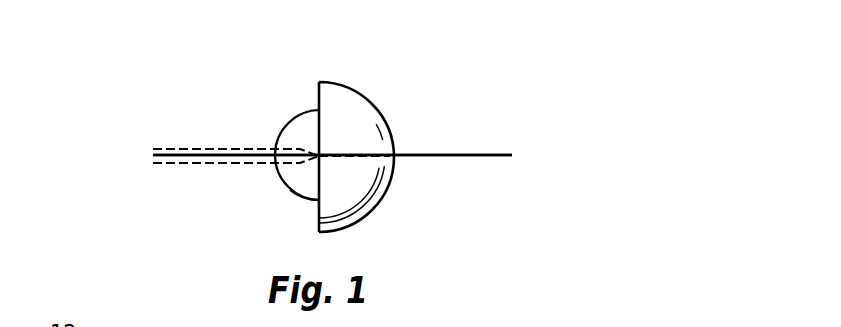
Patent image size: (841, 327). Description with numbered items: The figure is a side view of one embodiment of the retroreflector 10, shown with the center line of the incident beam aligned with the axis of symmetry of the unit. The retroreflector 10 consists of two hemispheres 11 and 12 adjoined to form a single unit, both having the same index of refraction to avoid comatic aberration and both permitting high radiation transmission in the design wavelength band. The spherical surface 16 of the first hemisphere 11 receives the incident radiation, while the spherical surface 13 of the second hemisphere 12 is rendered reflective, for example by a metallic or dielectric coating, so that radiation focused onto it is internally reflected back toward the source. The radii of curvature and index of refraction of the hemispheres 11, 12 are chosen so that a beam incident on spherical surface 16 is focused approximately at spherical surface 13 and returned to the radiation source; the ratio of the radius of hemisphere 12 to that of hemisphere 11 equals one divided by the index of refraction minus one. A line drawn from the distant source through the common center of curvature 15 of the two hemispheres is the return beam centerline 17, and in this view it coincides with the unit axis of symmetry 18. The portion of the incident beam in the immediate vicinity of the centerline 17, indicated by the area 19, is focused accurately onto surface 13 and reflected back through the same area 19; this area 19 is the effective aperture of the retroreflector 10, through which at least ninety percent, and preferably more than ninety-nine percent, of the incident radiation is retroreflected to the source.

The retroreflector 10 is at (177, 65).
The first hemisphere 11 is at (307, 140).
The second hemisphere 12 is at (347, 125).
The spherical surface 13 is at (390, 128).
The common center of curvature 15 is at (322, 157).
The spherical surface 16 is at (298, 197).
The return beam centerline 17 is at (432, 155).
The unit axis of symmetry 18 is at (455, 180).
The effective aperture 19 is at (190, 102).